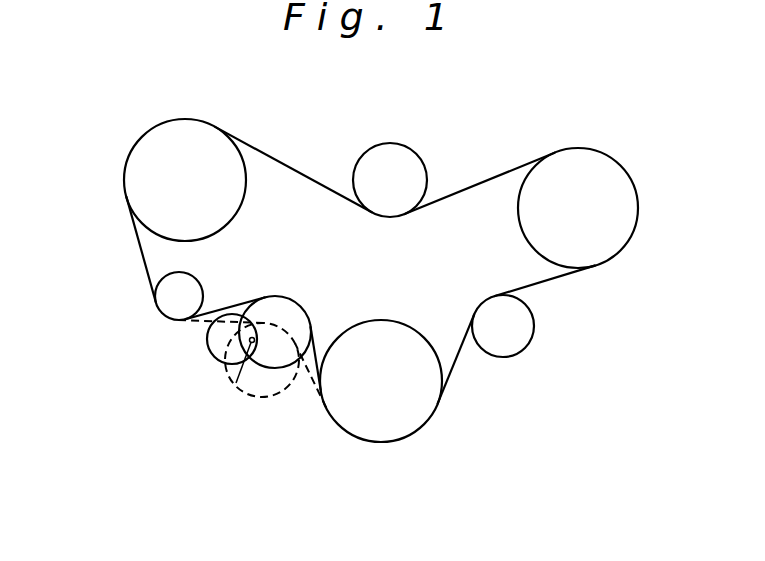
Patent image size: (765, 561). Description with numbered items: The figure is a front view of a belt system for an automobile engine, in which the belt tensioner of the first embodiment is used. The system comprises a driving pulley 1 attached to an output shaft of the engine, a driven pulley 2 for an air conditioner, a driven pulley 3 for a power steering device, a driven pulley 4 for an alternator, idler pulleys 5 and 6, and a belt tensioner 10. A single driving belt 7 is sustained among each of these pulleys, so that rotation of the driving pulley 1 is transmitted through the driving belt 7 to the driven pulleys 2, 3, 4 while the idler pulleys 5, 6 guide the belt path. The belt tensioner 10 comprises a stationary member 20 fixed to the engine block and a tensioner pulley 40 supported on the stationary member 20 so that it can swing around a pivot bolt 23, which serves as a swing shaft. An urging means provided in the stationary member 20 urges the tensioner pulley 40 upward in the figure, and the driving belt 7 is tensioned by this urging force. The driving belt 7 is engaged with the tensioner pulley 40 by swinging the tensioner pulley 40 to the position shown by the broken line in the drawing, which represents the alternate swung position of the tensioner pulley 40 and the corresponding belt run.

The driving pulley 1 is at (400, 418).
The driven pulley 2 is at (590, 255).
The driven pulley 3 is at (137, 165).
The driven pulley 4 is at (168, 302).
The idler pulley 5 is at (510, 347).
The idler pulley 6 is at (410, 163).
The driving belt 7 is at (285, 163).
The belt tensioner 10 is at (292, 416).
The stationary member 20 is at (218, 348).
The pivot bolt 23 is at (236, 383).
The tensioner pulley 40 is at (265, 368).